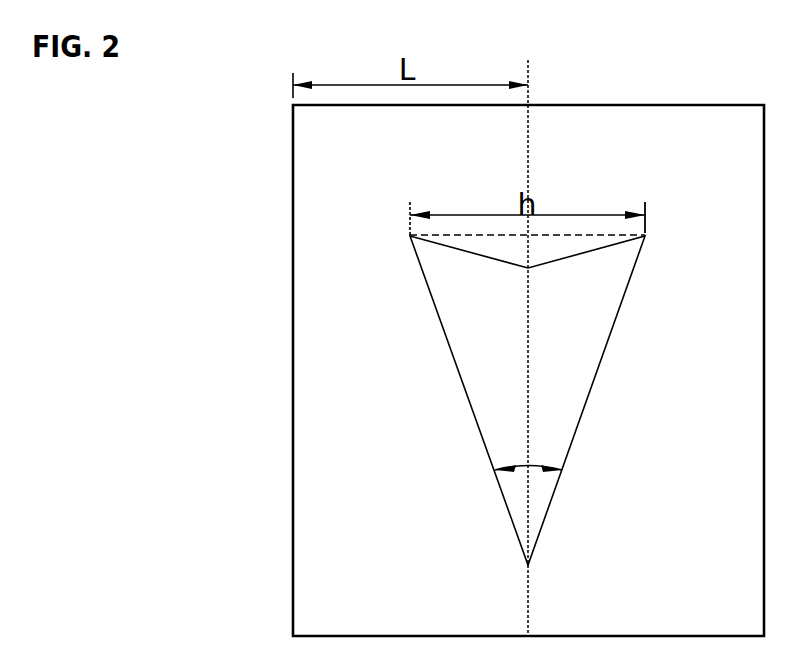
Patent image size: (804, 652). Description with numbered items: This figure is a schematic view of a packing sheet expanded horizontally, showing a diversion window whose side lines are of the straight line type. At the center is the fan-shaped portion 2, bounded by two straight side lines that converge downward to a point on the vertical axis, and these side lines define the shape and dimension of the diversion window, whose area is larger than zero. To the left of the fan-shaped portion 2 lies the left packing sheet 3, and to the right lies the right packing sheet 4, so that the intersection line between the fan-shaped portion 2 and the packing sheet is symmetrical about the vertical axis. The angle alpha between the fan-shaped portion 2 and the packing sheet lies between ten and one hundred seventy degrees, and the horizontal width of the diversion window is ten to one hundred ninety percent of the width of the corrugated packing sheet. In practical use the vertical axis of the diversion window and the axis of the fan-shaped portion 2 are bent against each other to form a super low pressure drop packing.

The fan-shaped portion 2 is at (527, 400).
The left packing sheet 3 is at (410, 370).
The right packing sheet 4 is at (646, 370).